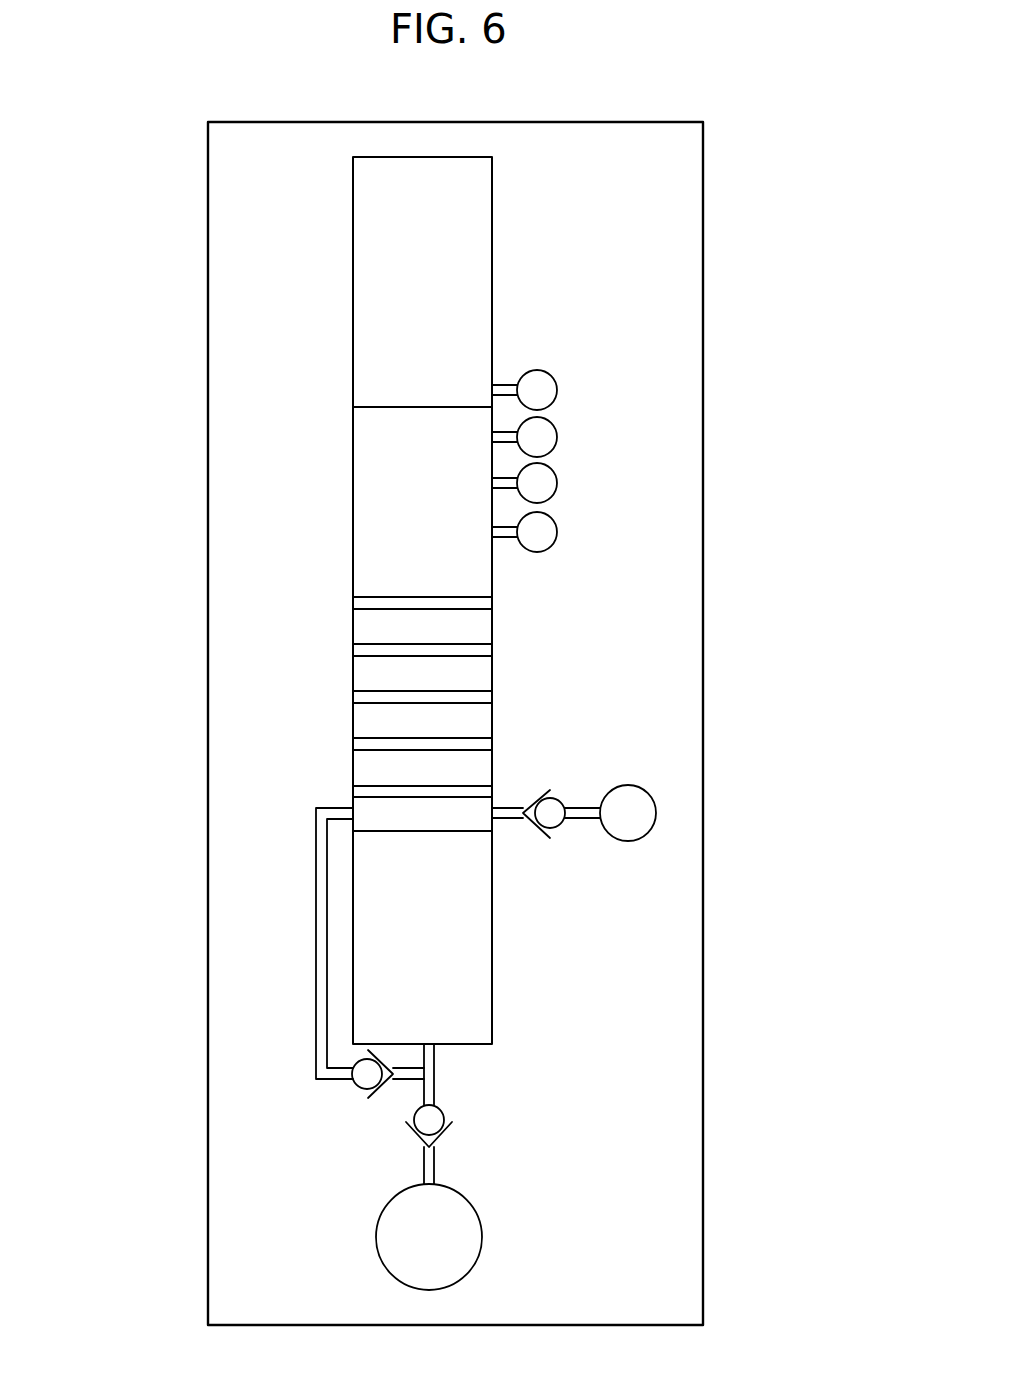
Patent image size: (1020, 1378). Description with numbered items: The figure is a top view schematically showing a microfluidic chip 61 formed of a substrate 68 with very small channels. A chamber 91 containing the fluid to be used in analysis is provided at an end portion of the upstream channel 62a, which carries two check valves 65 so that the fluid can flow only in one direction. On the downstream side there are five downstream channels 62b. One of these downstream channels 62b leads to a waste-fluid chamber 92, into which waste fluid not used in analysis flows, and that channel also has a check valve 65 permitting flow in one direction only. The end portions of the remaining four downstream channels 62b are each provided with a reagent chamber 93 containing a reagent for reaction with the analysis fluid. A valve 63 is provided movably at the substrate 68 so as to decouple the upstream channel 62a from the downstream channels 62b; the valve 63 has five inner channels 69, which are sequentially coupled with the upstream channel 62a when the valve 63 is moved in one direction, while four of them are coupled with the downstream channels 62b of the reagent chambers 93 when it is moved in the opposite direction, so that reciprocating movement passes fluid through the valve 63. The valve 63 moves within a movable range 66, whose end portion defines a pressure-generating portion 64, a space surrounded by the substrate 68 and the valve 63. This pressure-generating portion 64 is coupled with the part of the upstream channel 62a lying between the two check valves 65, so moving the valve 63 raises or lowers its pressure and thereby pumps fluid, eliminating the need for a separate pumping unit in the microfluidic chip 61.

The microfluidic chip 61 is at (526, 107).
The substrate 68 is at (648, 187).
The movable range 66 is at (353, 303).
The valve 63 is at (380, 542).
The inner channels 69 is at (462, 792).
The pressure-generating portion 64 is at (377, 995).
The reagent chambers 93 is at (540, 391).
The downstream channels 62b is at (504, 388).
The waste-fluid chamber 92 is at (633, 818).
The check valve 65 is at (552, 818).
The upstream channel 62a is at (318, 888).
The chamber 91 is at (400, 1248).